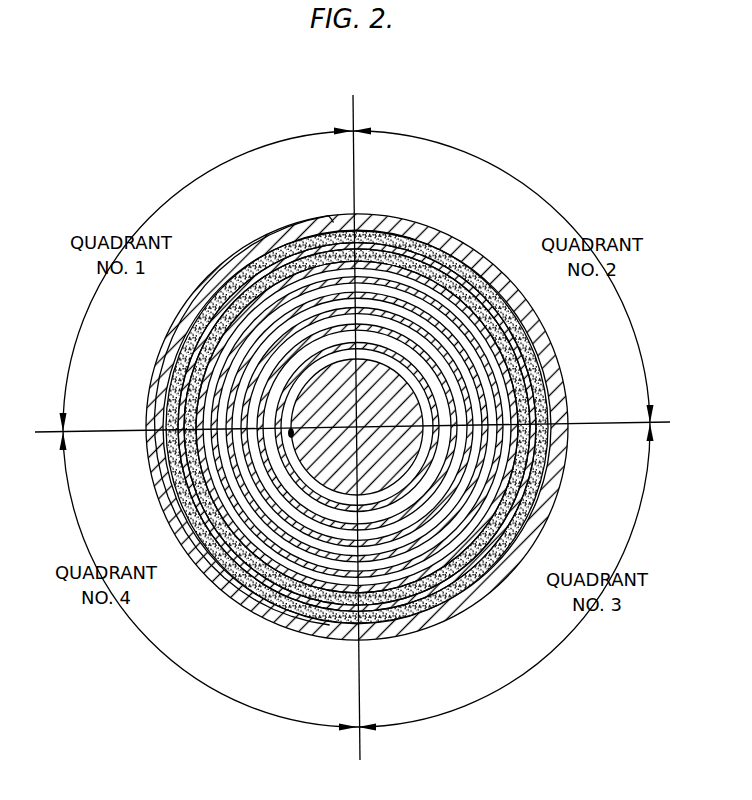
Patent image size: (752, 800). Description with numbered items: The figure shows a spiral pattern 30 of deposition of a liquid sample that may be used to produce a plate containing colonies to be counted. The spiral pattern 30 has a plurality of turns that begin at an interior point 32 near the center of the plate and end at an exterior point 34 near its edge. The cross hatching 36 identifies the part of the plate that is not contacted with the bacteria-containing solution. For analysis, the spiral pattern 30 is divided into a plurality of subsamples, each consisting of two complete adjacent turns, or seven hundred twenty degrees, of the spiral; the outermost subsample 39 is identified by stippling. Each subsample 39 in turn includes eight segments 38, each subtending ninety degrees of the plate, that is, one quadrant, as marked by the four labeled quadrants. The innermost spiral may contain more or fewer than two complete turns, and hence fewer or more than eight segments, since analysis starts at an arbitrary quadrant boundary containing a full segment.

The spiral pattern 30 is at (258, 208).
The interior point 32 is at (296, 437).
The exterior point 34 is at (330, 221).
The cross hatching 36 is at (160, 378).
The segment 38 is at (507, 389).
The outermost subsample 39 is at (458, 246).